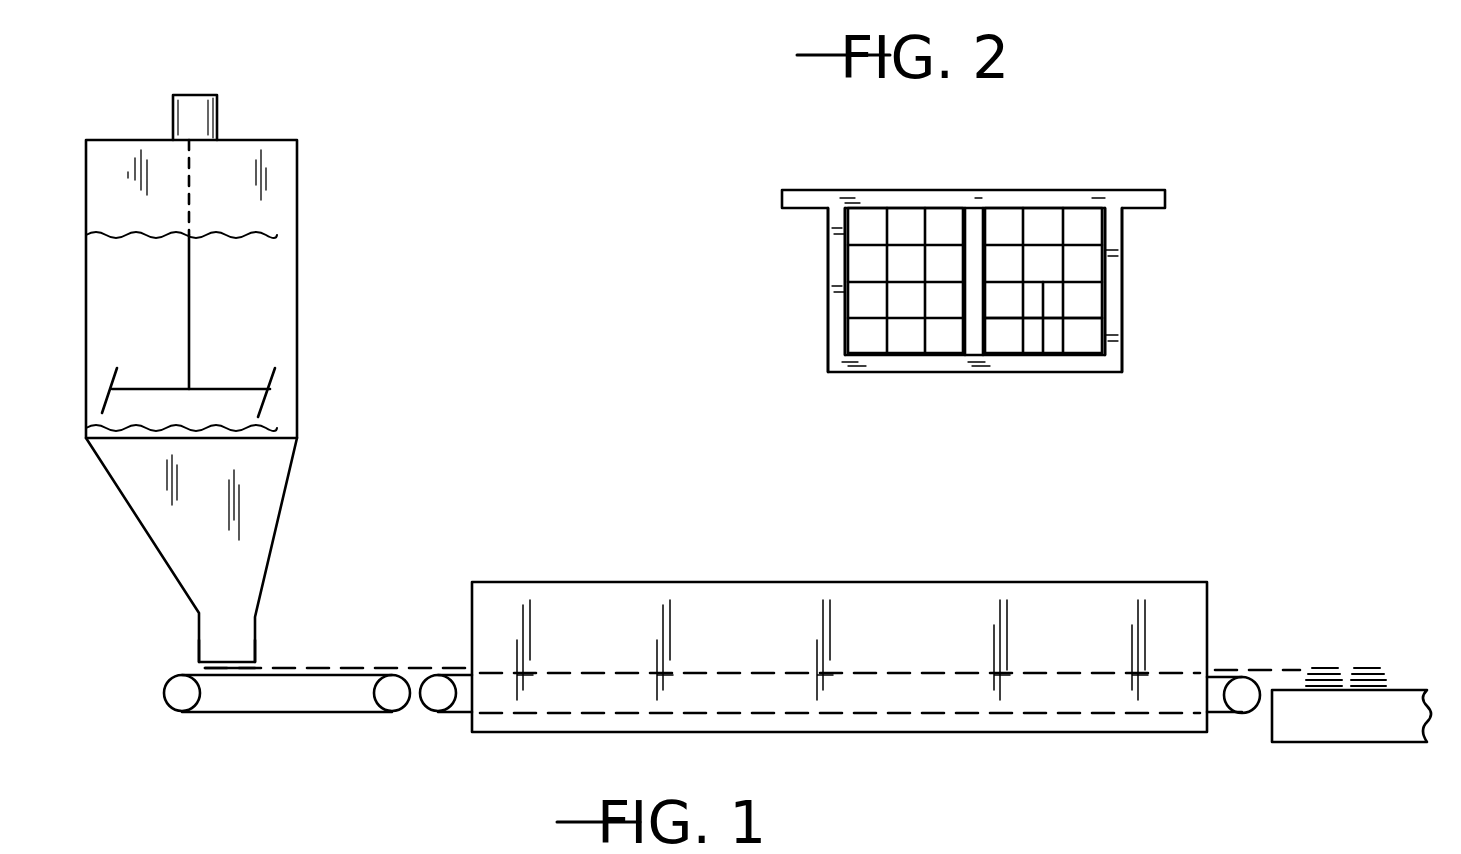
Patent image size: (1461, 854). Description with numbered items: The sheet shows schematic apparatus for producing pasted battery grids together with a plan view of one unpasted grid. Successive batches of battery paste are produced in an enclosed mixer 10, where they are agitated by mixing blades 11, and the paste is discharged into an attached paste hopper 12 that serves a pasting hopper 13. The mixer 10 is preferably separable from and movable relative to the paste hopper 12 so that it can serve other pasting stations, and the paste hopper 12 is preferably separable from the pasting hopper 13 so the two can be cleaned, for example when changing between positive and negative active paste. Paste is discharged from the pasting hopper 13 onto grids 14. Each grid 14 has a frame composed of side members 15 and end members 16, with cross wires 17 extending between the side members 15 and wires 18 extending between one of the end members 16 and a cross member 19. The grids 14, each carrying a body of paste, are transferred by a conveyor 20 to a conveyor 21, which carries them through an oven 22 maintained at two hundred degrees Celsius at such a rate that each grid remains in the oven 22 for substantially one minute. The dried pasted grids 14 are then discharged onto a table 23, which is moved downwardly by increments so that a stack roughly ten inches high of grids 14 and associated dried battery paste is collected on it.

In FIG. 1, the mixer 10 is at (297, 293).
In FIG. 1, the mixing blades 11 is at (115, 373).
In FIG. 1, the paste hopper 12 is at (285, 500).
In FIG. 1, the pasting hopper 13 is at (258, 630).
In FIG. 1, the grids 14 is at (226, 675).
In FIG. 2, the grids 14 is at (850, 375).
In FIG. 2, the side members 15 is at (868, 190).
In FIG. 2, the end members 16 is at (823, 304).
In FIG. 2, the cross wires 17 is at (1072, 220).
In FIG. 2, the wires 18 is at (1008, 322).
In FIG. 2, the cross member 19 is at (945, 215).
In FIG. 1, the conveyor 20 is at (333, 713).
In FIG. 1, the conveyor 21 is at (560, 712).
In FIG. 1, the oven 22 is at (858, 582).
In FIG. 1, the table 23 is at (1402, 685).